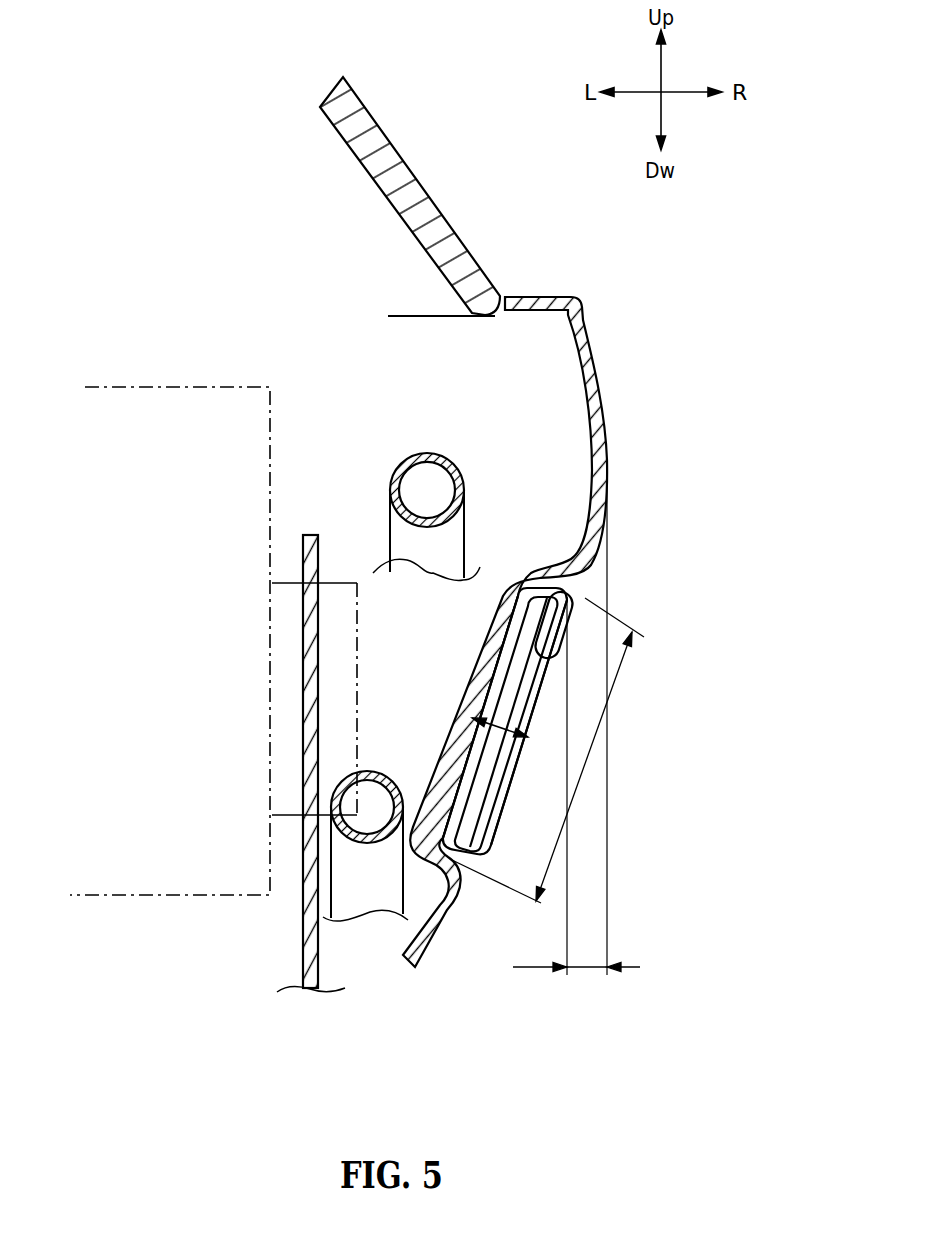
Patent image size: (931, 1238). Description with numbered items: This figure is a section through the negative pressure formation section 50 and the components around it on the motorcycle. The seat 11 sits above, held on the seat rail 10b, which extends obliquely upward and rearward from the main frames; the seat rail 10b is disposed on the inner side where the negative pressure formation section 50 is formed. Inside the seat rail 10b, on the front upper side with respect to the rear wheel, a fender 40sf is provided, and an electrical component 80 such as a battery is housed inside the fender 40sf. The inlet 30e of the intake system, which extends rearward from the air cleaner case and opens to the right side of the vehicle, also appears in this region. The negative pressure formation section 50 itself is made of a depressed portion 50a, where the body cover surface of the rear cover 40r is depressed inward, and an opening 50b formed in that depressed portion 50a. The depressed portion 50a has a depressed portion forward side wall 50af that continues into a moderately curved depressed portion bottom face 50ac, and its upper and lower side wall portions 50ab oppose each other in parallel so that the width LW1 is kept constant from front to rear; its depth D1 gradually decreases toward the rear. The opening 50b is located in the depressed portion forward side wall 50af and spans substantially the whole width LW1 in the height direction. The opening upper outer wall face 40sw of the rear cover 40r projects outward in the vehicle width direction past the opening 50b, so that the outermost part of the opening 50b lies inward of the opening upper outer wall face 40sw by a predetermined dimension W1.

The seat 11 is at (452, 226).
The electrical component 80 is at (166, 388).
The seat rail 10b is at (403, 466).
The rear cover 40r is at (584, 632).
The opening upper outer wall face 40sw is at (607, 452).
The fender 40sf is at (303, 682).
The inlet 30e is at (357, 655).
The negative pressure formation section 50 is at (621, 721).
The depressed portion 50a is at (598, 721).
The opening 50b is at (560, 620).
The side wall portion 50ab is at (553, 617).
The depressed portion bottom face 50ac is at (463, 746).
The depressed portion forward side wall 50af is at (457, 768).
The depth D1 is at (503, 727).
The width LW1 is at (572, 795).
The predetermined dimension W1 is at (589, 729).